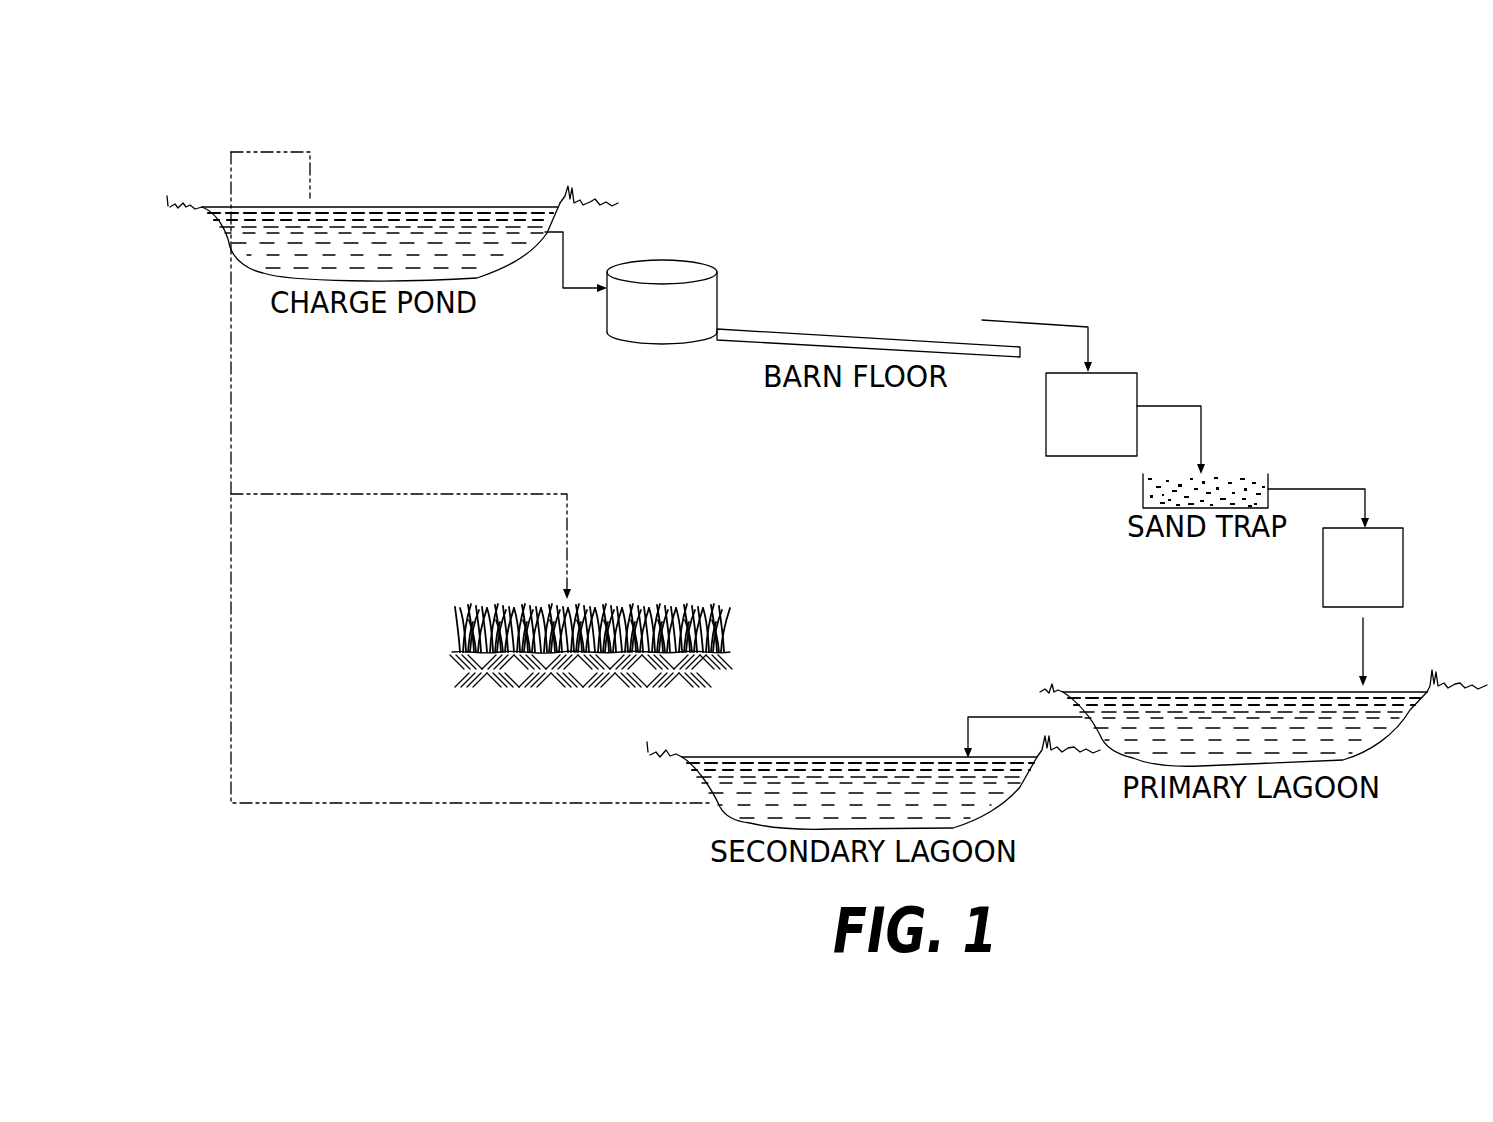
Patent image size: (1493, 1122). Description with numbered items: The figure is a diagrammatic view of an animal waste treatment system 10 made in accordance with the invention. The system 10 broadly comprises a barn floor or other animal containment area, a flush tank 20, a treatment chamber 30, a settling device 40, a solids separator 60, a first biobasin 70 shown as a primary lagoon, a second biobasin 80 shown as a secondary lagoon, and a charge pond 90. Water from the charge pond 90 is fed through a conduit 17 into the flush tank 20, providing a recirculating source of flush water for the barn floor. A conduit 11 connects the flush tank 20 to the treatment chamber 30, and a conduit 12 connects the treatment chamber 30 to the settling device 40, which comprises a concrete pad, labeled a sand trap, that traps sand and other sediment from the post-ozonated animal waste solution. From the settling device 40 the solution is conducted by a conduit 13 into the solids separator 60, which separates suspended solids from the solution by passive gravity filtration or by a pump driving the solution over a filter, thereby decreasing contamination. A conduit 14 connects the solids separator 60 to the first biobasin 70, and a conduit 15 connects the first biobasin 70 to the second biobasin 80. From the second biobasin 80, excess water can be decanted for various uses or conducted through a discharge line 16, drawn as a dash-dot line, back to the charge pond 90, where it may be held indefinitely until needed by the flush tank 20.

The system 10 is at (236, 134).
The charge pond 90 is at (227, 232).
The conduit 17 is at (565, 233).
The flush tank 20 is at (607, 327).
The conduit 11 is at (1040, 322).
The treatment chamber 30 is at (1046, 417).
The conduit 12 is at (1183, 406).
The settling device 40 is at (1143, 490).
The conduit 13 is at (1335, 488).
The solids separator 60 is at (1323, 565).
The conduit 14 is at (1365, 635).
The first biobasin 70 is at (1410, 712).
The conduit 15 is at (966, 720).
The second biobasin 80 is at (1022, 787).
The discharge line 16 is at (231, 580).